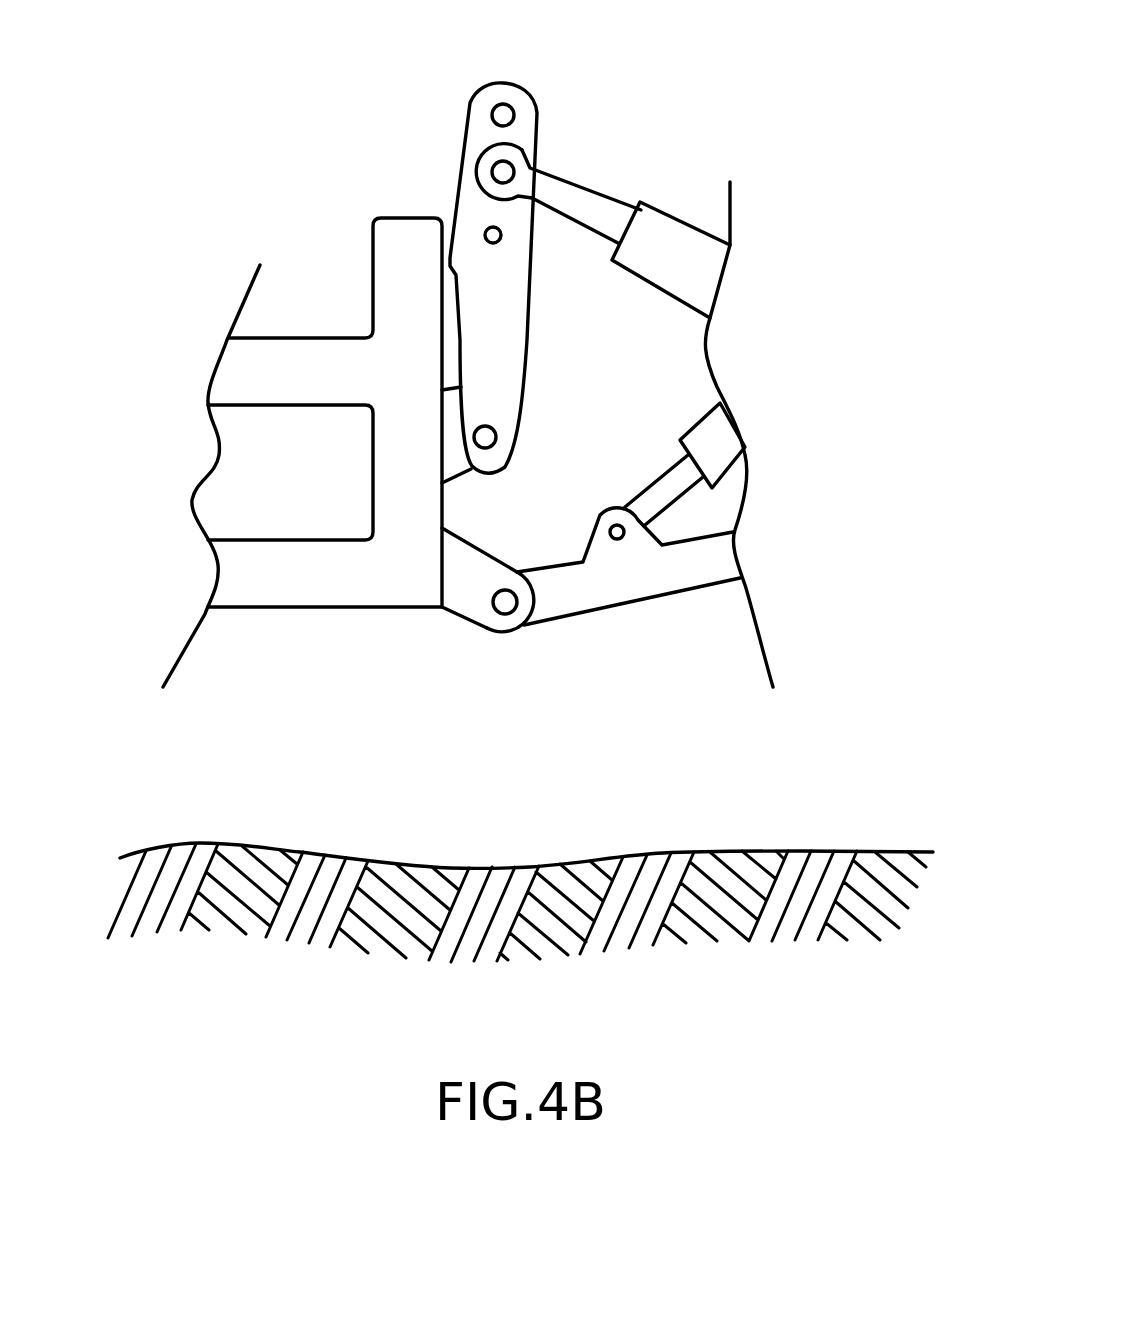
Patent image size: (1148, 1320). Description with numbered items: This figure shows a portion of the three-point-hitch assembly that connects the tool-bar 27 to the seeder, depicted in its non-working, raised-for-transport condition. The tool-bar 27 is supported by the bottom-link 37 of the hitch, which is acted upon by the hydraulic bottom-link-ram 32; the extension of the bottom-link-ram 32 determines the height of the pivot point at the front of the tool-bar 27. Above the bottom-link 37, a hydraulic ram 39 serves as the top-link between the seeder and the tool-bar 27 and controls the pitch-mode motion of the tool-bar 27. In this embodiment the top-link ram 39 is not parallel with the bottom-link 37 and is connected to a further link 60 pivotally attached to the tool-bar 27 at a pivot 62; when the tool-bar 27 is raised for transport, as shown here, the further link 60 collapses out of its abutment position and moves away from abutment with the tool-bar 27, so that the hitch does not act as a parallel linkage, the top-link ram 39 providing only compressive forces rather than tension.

The tool-bar 27 is at (333, 360).
The lever arm 60 is at (482, 130).
The top-link ram 39 is at (677, 247).
The pivot pin 62 is at (497, 437).
The bottom-link-ram 32 is at (717, 437).
The bottom-link 37 is at (673, 573).